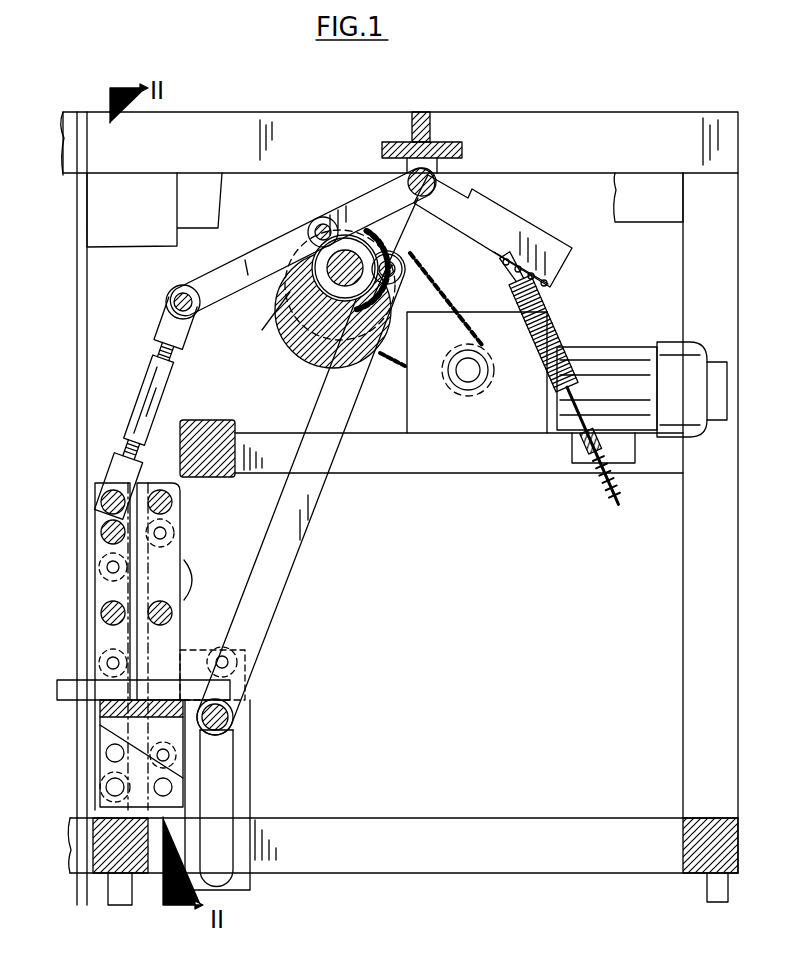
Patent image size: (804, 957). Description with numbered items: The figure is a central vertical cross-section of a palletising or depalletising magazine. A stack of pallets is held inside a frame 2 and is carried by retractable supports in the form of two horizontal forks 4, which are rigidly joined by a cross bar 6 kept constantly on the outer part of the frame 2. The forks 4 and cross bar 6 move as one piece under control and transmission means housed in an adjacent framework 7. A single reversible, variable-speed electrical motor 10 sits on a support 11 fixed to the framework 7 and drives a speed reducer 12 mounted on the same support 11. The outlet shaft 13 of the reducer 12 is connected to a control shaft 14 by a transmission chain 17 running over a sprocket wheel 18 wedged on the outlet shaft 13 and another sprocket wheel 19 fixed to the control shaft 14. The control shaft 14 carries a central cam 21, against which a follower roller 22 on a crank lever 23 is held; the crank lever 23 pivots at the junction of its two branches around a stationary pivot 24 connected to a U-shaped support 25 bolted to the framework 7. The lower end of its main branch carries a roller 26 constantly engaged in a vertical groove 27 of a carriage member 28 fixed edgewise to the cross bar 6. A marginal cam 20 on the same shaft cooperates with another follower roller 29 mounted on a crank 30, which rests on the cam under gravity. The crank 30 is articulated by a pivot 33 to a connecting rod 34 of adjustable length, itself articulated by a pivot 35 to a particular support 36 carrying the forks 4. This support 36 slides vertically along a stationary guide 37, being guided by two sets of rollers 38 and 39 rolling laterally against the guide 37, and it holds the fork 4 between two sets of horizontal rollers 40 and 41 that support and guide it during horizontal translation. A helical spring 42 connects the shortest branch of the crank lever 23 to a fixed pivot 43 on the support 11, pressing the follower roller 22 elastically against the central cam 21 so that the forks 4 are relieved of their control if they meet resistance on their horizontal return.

The frame 2 is at (70, 122).
The forks 4 is at (157, 682).
The cross bar 6 is at (98, 738).
The framework 7 is at (603, 120).
The electrical motor 10 is at (618, 352).
The support 11 is at (487, 463).
The speed reducer 12 is at (426, 416).
The outlet shaft 13 is at (472, 376).
The control shaft 14 is at (368, 258).
The transmission chain 17 is at (432, 293).
The sprocket wheel 18 is at (446, 365).
The sprocket wheel 19 is at (285, 240).
The marginal cam 20 is at (276, 296).
The central cam 21 is at (300, 356).
The follower roller 22 is at (405, 262).
The crank lever 23 is at (520, 235).
The stationary pivot 24 is at (436, 184).
The U-shaped support 25 is at (410, 172).
The roller 26 is at (248, 754).
The vertical groove 27 is at (240, 792).
The carriage member 28 is at (250, 806).
The follower roller 29 is at (323, 217).
The crank 30 is at (248, 256).
The pivot 33 is at (168, 296).
The connecting rod 34 is at (148, 370).
The pivot 35 is at (100, 498).
The particular support 36 is at (184, 584).
The guide 37 is at (94, 620).
The rollers 38 is at (86, 584).
The rollers 39 is at (178, 556).
The horizontal rollers 40 is at (100, 656).
The horizontal rollers 41 is at (240, 718).
The helical spring 42 is at (545, 316).
The fixed pivot 43 is at (598, 468).